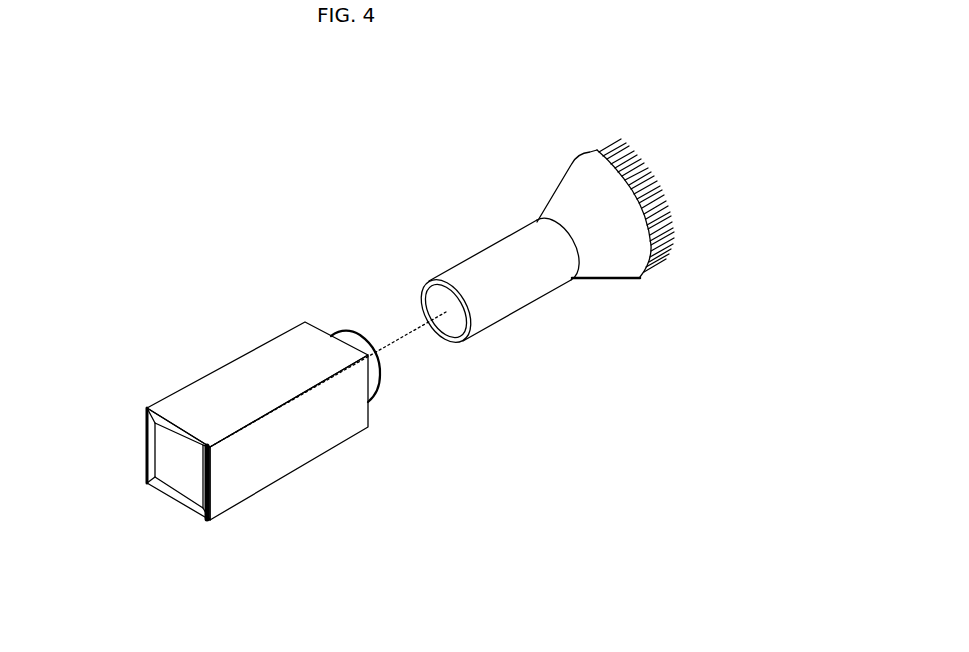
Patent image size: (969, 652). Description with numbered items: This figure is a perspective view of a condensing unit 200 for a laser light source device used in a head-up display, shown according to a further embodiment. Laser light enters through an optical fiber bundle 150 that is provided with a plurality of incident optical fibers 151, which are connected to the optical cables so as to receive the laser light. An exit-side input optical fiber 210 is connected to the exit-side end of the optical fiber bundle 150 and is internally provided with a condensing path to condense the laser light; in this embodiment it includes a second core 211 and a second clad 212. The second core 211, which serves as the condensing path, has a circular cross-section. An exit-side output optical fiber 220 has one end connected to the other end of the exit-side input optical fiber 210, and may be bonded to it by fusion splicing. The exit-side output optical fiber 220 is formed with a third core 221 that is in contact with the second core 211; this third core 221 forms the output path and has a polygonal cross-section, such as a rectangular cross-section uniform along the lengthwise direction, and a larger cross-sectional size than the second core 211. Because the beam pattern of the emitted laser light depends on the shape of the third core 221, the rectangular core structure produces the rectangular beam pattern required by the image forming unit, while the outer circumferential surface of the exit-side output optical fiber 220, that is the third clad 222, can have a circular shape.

The cleaning nozzle assembly 200 is at (323, 150).
The exit-side input optical fiber 210 is at (507, 248).
The second core 211 is at (448, 322).
The second clad 212 is at (453, 337).
The optical fiber bundle 150 is at (607, 262).
The incident optical fibers 151 is at (612, 160).
The exit-side output optical fiber 220 is at (248, 370).
The third core 221 is at (158, 453).
The third clad 222 is at (147, 445).